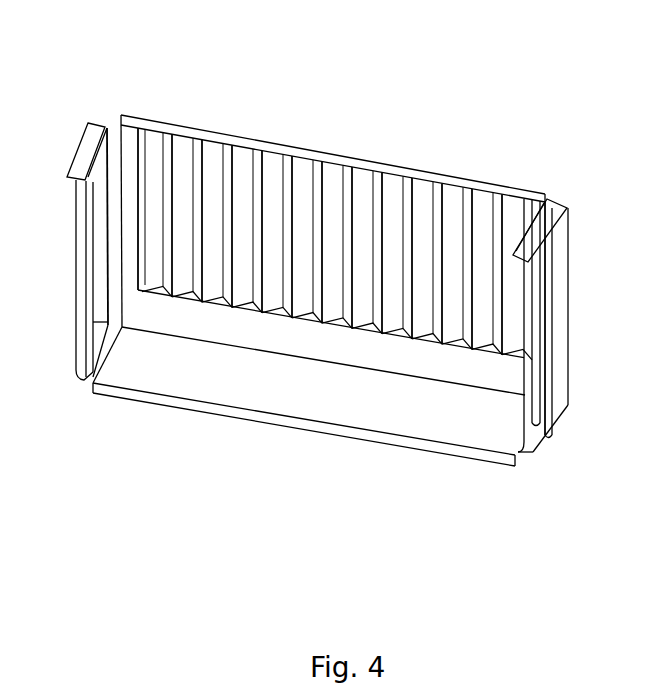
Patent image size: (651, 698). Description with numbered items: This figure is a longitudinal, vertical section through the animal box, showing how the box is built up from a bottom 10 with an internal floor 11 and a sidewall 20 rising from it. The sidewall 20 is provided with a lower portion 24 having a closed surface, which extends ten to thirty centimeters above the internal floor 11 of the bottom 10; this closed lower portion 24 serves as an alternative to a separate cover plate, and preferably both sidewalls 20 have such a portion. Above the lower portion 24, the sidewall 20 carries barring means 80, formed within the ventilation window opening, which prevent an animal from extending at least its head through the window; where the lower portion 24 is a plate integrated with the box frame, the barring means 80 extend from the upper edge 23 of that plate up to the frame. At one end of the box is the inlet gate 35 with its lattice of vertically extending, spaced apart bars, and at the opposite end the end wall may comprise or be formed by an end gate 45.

The bottom 10 is at (318, 282).
The internal floor 11 is at (307, 403).
The sidewall 20 is at (333, 220).
The upper edge 23 is at (474, 350).
The lower portion 24 is at (205, 322).
The inlet gate 35 is at (550, 217).
The end gate 45 is at (90, 138).
The barring means 80 is at (453, 226).